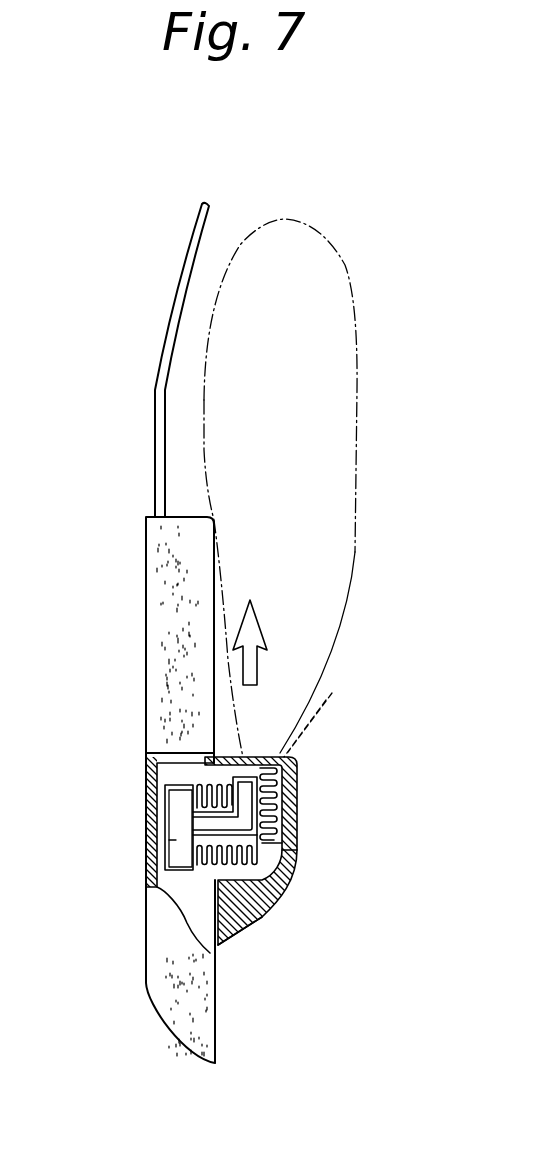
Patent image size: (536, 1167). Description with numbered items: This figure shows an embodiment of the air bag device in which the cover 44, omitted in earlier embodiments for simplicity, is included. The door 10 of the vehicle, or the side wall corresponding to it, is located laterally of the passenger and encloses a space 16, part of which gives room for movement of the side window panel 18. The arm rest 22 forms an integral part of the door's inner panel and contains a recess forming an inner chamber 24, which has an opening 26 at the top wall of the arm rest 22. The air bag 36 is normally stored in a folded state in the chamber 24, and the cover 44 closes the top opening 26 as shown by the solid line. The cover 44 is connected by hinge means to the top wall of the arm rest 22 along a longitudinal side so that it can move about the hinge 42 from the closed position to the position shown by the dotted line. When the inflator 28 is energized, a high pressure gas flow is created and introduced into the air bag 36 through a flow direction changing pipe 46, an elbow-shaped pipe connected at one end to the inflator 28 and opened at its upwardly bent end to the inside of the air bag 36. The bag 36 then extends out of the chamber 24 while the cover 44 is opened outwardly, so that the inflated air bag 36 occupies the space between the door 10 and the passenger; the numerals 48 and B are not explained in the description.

The door 10 is at (147, 643).
The space 16 is at (192, 762).
The side window panel 18 is at (153, 393).
The arm rest 22 is at (292, 897).
The inner chamber 24 is at (267, 905).
The opening 26 is at (210, 778).
The inflator 28 is at (175, 840).
The air bag 36 is at (355, 552).
The hinge 42 is at (297, 762).
The cover 44 is at (283, 742).
The flow direction changing pipe 46 is at (243, 816).
The spring 48 is at (262, 843).
The direction arrow B is at (262, 630).